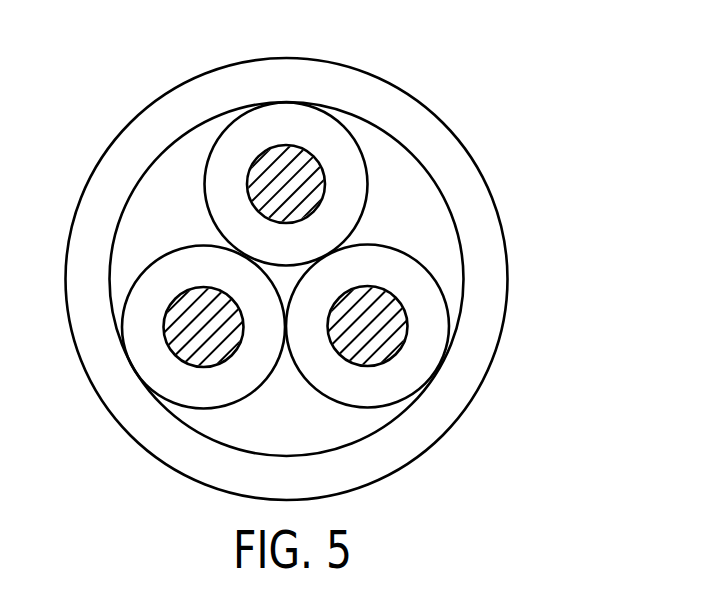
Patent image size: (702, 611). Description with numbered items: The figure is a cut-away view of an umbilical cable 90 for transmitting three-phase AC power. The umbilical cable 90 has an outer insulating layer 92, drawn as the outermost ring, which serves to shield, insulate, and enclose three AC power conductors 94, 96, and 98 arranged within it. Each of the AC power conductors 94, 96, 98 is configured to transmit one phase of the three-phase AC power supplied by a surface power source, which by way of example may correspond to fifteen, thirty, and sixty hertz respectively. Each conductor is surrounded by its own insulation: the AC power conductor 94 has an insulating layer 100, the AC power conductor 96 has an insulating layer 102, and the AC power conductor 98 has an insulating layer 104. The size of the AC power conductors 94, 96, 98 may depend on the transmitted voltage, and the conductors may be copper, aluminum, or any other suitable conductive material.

The umbilical cable 90 is at (480, 73).
The outer insulating layer 92 is at (510, 263).
The AC power conductor 94 is at (246, 185).
The AC power conductor 96 is at (178, 292).
The AC power conductor 98 is at (388, 293).
The insulating layer 100 is at (352, 192).
The insulating layer 102 is at (243, 378).
The insulating layer 104 is at (337, 384).